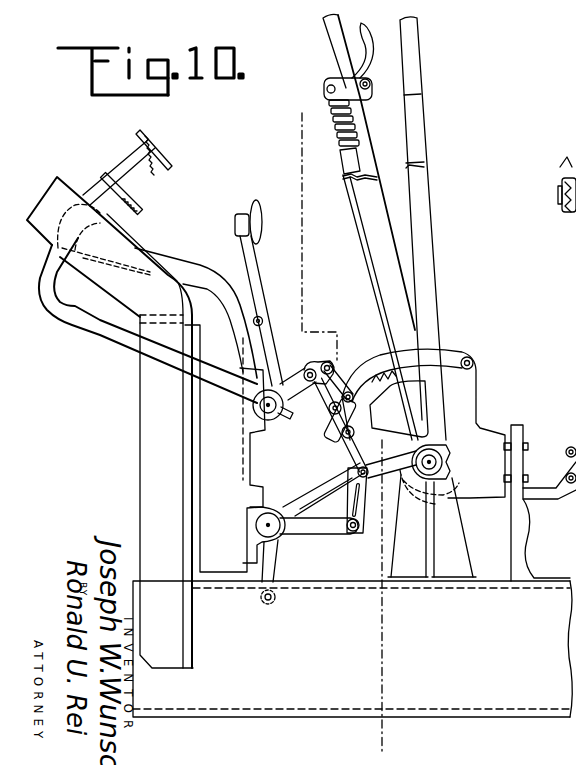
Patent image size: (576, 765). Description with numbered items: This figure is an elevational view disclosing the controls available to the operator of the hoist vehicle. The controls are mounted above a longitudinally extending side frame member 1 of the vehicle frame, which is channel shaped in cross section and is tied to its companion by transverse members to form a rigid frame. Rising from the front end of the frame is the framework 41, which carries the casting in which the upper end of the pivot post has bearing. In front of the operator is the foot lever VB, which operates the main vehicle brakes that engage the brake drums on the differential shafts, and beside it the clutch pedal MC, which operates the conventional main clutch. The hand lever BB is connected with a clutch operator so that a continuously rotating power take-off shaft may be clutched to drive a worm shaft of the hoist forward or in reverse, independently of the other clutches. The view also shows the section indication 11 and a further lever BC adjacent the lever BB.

The side frame member 1 is at (352, 649).
The section line 11- 11 is at (284, 116).
The framework 41 is at (51, 203).
The lever BB is at (334, 47).
The control bar BC is at (416, 48).
The foot lever VB is at (129, 173).
The clutch pedal MC is at (132, 191).